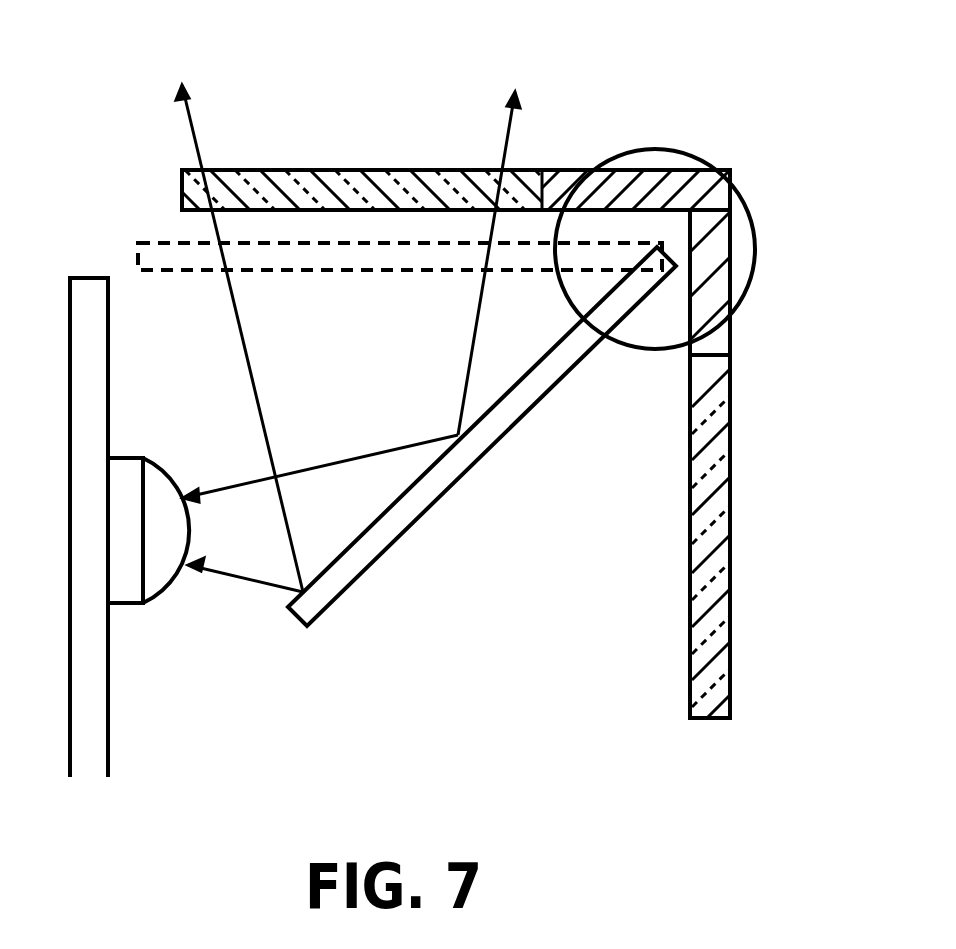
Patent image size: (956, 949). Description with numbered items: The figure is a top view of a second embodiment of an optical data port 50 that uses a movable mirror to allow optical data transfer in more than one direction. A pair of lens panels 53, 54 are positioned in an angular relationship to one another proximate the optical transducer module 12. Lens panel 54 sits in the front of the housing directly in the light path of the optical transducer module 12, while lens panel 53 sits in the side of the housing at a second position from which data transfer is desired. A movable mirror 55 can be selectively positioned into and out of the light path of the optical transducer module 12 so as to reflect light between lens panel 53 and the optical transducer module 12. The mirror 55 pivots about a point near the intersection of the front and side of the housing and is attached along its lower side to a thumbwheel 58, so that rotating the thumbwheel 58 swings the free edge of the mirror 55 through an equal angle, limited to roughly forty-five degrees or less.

The optical data port 50 is at (315, 142).
The lens panel 54 is at (442, 170).
The thumbwheel 58 is at (745, 220).
The lens panel 53 is at (732, 520).
The movable mirror 55 is at (383, 552).
The optical transducer module 12 is at (135, 592).